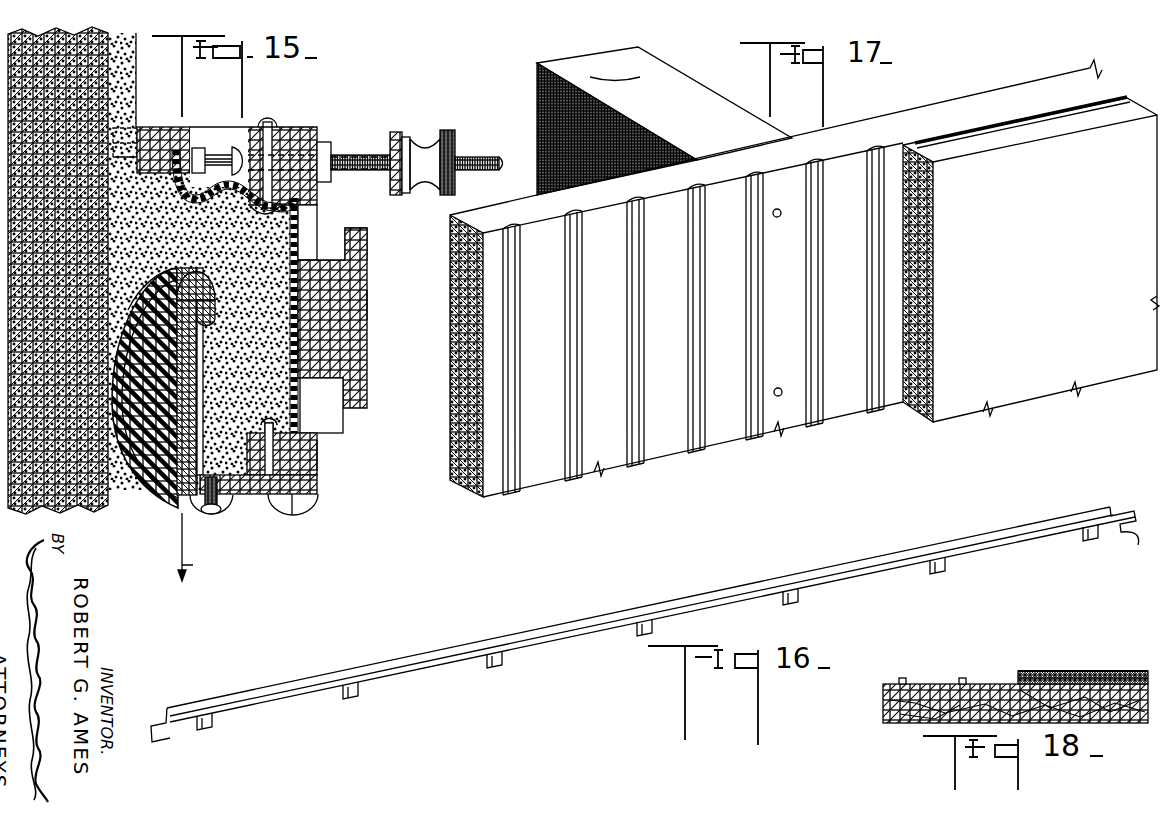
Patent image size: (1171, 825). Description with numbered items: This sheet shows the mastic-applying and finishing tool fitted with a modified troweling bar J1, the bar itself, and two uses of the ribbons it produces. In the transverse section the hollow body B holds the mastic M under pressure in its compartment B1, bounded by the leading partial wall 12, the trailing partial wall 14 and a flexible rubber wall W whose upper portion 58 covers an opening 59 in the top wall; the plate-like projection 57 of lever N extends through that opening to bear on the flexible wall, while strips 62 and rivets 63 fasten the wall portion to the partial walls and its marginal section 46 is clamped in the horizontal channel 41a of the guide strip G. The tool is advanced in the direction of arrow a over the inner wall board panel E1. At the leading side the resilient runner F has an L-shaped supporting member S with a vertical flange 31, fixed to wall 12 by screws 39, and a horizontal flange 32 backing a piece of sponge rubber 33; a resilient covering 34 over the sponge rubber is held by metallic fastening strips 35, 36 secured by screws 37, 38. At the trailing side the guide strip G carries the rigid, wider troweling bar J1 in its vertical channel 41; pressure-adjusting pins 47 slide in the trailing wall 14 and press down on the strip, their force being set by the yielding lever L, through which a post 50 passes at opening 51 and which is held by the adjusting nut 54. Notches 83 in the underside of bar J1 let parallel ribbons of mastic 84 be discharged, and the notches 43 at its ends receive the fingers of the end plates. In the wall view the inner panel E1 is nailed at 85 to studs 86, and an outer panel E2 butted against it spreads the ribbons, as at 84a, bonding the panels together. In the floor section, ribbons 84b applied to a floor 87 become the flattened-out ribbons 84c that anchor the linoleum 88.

In FIG. 15, the mastic ribbons 84 is at (132, 73).
In FIG. 17, the mastic ribbons 84 is at (687, 302).
In FIG. 17, the spread mastic ribbons 84a is at (990, 127).
In FIG. 18, the parallel mastic ribbons 84b is at (962, 678).
In FIG. 18, the flattened-out mastic ribbons 84c is at (1048, 661).
In FIG. 15, the notches 83 is at (157, 193).
In FIG. 16, the notches 83 is at (348, 699).
In FIG. 16, the notches in bar ends 43 is at (160, 728).
In FIG. 15, the modified troweling bar J1 is at (148, 140).
In FIG. 16, the modified troweling bar J1 is at (614, 607).
In FIG. 15, the vertical channel 41 is at (172, 133).
In FIG. 15, the horizontal channel 41a is at (198, 148).
In FIG. 15, the guide strip G is at (200, 130).
In FIG. 15, the pressure-adjusting pins 47 is at (241, 168).
In FIG. 15, the trailing partial wall 14 is at (303, 125).
In FIG. 15, the yielding lever L is at (398, 132).
In FIG. 15, the adjusting nut 54 is at (447, 130).
In FIG. 15, the opening 51 is at (389, 151).
In FIG. 15, the post 50 is at (478, 158).
In FIG. 15, the opening 59 is at (313, 218).
In FIG. 15, the plate-like projection 57 is at (368, 252).
In FIG. 15, the flexible wall W is at (333, 283).
In FIG. 15, the lever N is at (368, 300).
In FIG. 15, the upper portion of flexible wall 58 is at (302, 343).
In FIG. 15, the marginal section 46 is at (183, 197).
In FIG. 15, the strips 62 is at (231, 213).
In FIG. 15, the rivets 63 is at (262, 440).
In FIG. 15, the resilient covering 34 is at (140, 282).
In FIG. 15, the screws 38 is at (212, 290).
In FIG. 15, the metallic fastening strip 36 is at (213, 304).
In FIG. 15, the sponge rubber 33 is at (175, 341).
In FIG. 15, the horizontal flange 32 is at (195, 370).
In FIG. 15, the mastic M is at (296, 403).
In FIG. 15, the mastic-receiving compartment B1 is at (325, 414).
In FIG. 15, the leading partial wall 12 is at (317, 452).
In FIG. 15, the hollow body B is at (321, 463).
In FIG. 15, the vertical flange 31 is at (319, 483).
In FIG. 15, the L-shaped supporting member S is at (320, 502).
In FIG. 15, the screws 39 is at (302, 510).
In FIG. 15, the metallic fastening strip 35 is at (233, 515).
In FIG. 15, the screws 37 is at (212, 514).
In FIG. 15, the resilient runner F is at (177, 510).
In FIG. 15, the inner wall board panel E1 is at (78, 506).
In FIG. 17, the inner wall board panel E1 is at (855, 138).
In FIG. 17, the outer panel E2 is at (1040, 255).
In FIG. 15, the direction arrow a is at (196, 547).
In FIG. 17, the studs 86 is at (605, 58).
In FIG. 17, the nails 85 is at (783, 381).
In FIG. 18, the floor 87 is at (883, 711).
In FIG. 18, the linoleum 88 is at (1112, 671).